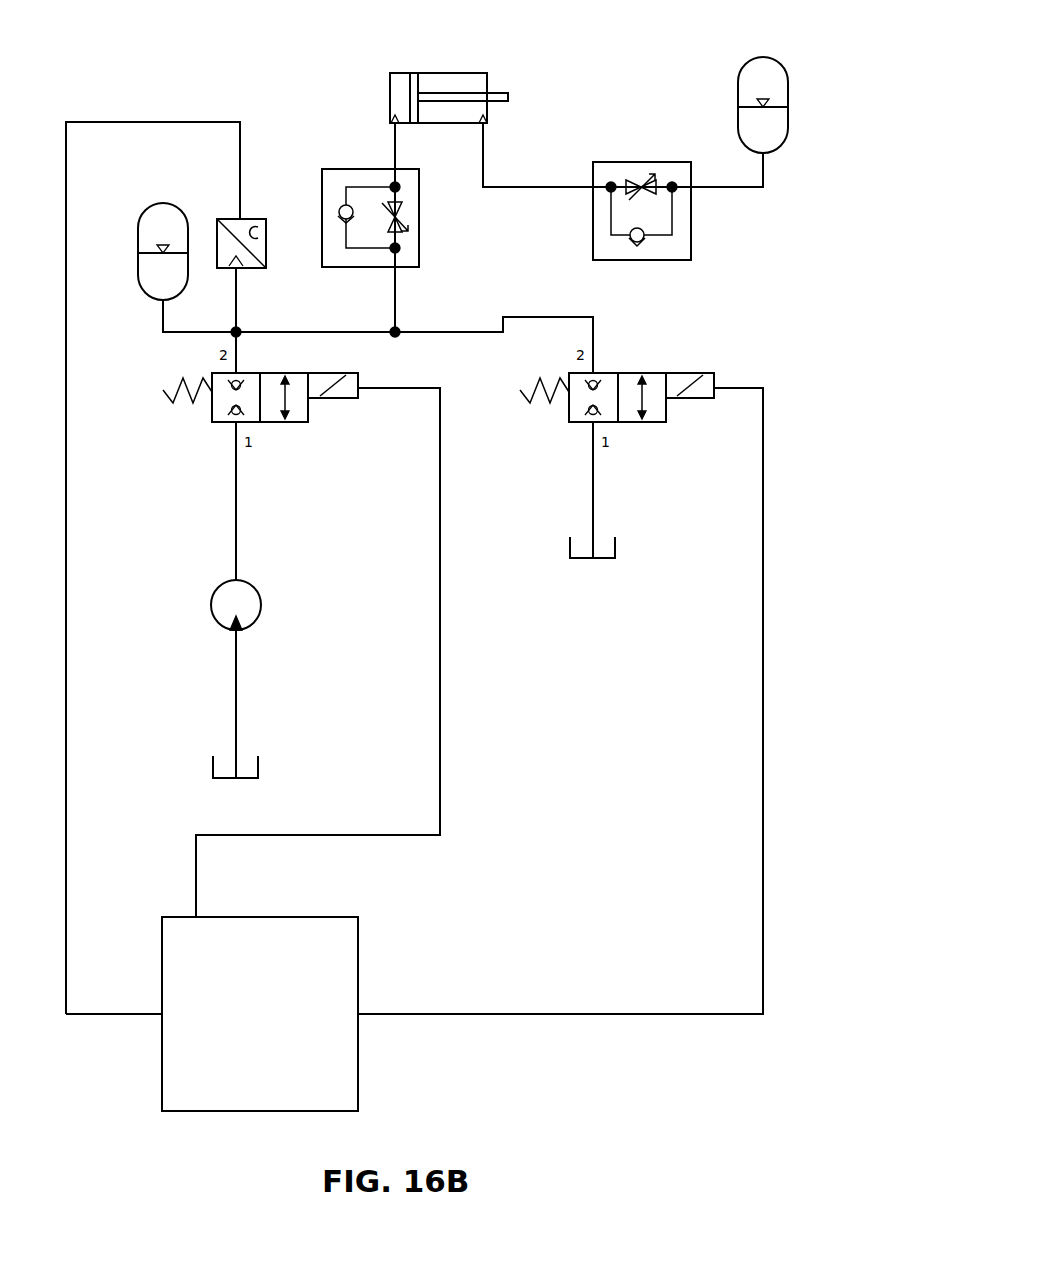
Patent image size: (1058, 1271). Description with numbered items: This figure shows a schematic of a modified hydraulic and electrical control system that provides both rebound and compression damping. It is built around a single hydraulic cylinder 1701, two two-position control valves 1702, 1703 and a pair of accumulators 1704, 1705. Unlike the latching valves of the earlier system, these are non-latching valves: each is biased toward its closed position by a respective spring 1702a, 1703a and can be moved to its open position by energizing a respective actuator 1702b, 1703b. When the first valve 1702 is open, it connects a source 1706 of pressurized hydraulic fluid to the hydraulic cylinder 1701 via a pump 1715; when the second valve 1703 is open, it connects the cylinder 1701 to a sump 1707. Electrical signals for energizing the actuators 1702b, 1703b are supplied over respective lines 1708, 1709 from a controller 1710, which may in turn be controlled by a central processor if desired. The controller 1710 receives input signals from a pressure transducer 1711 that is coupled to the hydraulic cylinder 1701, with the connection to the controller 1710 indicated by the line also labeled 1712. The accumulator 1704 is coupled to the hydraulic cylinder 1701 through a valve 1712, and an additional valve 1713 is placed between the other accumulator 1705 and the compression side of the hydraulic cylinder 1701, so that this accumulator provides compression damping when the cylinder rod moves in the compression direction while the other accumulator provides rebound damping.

The hydraulic cylinder 1701 is at (438, 73).
The non-latching valve 1702 is at (290, 422).
The spring 1702a is at (175, 410).
The actuator 1702b is at (343, 398).
The non-latching valve 1703 is at (648, 422).
The spring 1703a is at (532, 410).
The actuator 1703b is at (698, 398).
The accumulator 1704 is at (750, 57).
The accumulator 1705 is at (140, 206).
The source of pressurized hydraulic fluid 1706 is at (260, 762).
The sump 1707 is at (617, 545).
The line 1708 is at (197, 862).
The line 1709 is at (762, 762).
The controller 1710 is at (358, 952).
The pressure transducer 1711 is at (258, 268).
The valve 1712 is at (607, 162).
The valve 1713 is at (420, 247).
The pump 1715 is at (260, 590).